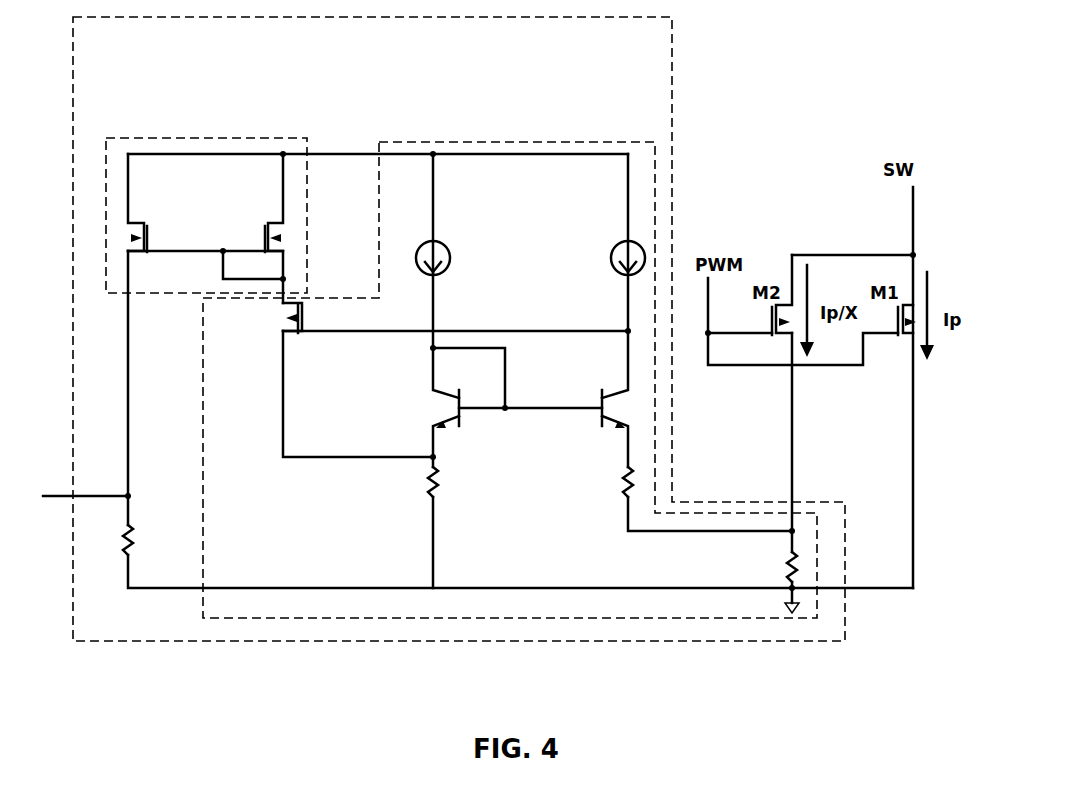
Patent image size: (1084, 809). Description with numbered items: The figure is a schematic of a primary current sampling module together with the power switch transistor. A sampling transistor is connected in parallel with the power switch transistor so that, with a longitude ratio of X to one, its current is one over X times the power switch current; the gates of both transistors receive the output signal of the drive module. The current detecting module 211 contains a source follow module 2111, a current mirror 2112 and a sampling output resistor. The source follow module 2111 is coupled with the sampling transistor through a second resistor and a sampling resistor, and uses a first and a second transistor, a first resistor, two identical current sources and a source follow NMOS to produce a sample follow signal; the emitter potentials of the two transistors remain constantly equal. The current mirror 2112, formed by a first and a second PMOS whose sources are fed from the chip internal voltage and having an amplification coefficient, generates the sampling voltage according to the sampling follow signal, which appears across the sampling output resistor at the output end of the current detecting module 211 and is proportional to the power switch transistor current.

The current detecting module 211 is at (465, 642).
The source follow module 2111 is at (512, 140).
The current mirror 2112 is at (202, 138).